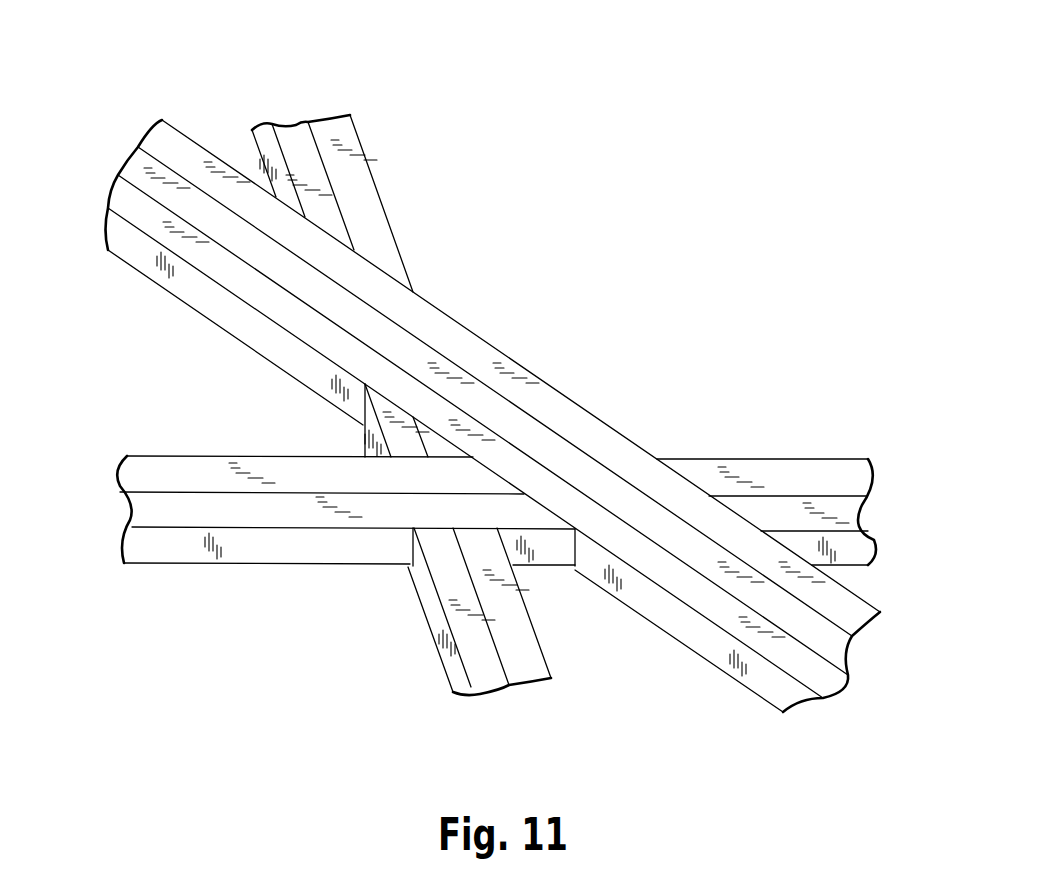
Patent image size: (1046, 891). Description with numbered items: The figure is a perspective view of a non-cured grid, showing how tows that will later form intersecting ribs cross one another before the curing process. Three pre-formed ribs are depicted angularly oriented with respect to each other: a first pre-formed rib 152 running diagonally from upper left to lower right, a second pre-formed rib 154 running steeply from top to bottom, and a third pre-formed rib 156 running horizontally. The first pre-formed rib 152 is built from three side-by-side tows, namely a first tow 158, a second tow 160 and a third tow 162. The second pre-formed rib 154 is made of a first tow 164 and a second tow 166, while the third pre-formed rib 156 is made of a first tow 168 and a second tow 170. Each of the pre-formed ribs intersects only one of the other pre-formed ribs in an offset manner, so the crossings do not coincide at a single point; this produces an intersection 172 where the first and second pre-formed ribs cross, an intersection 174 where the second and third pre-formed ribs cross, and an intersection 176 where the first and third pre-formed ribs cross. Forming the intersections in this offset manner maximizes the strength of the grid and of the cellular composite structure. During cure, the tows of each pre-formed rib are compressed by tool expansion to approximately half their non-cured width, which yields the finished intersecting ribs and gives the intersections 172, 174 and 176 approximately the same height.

The first pre-formed rib 152 is at (185, 126).
The second pre-formed rib 154 is at (369, 146).
The third pre-formed rib 156 is at (803, 450).
The first tow 158 is at (123, 198).
The second tow 160 is at (138, 163).
The third tow 162 is at (163, 142).
The first tow 164 is at (290, 143).
The second tow 166 is at (333, 133).
The first tow 168 is at (833, 477).
The second tow 170 is at (850, 520).
The intersection 172 is at (400, 350).
The intersection 174 is at (433, 502).
The intersection 176 is at (605, 492).